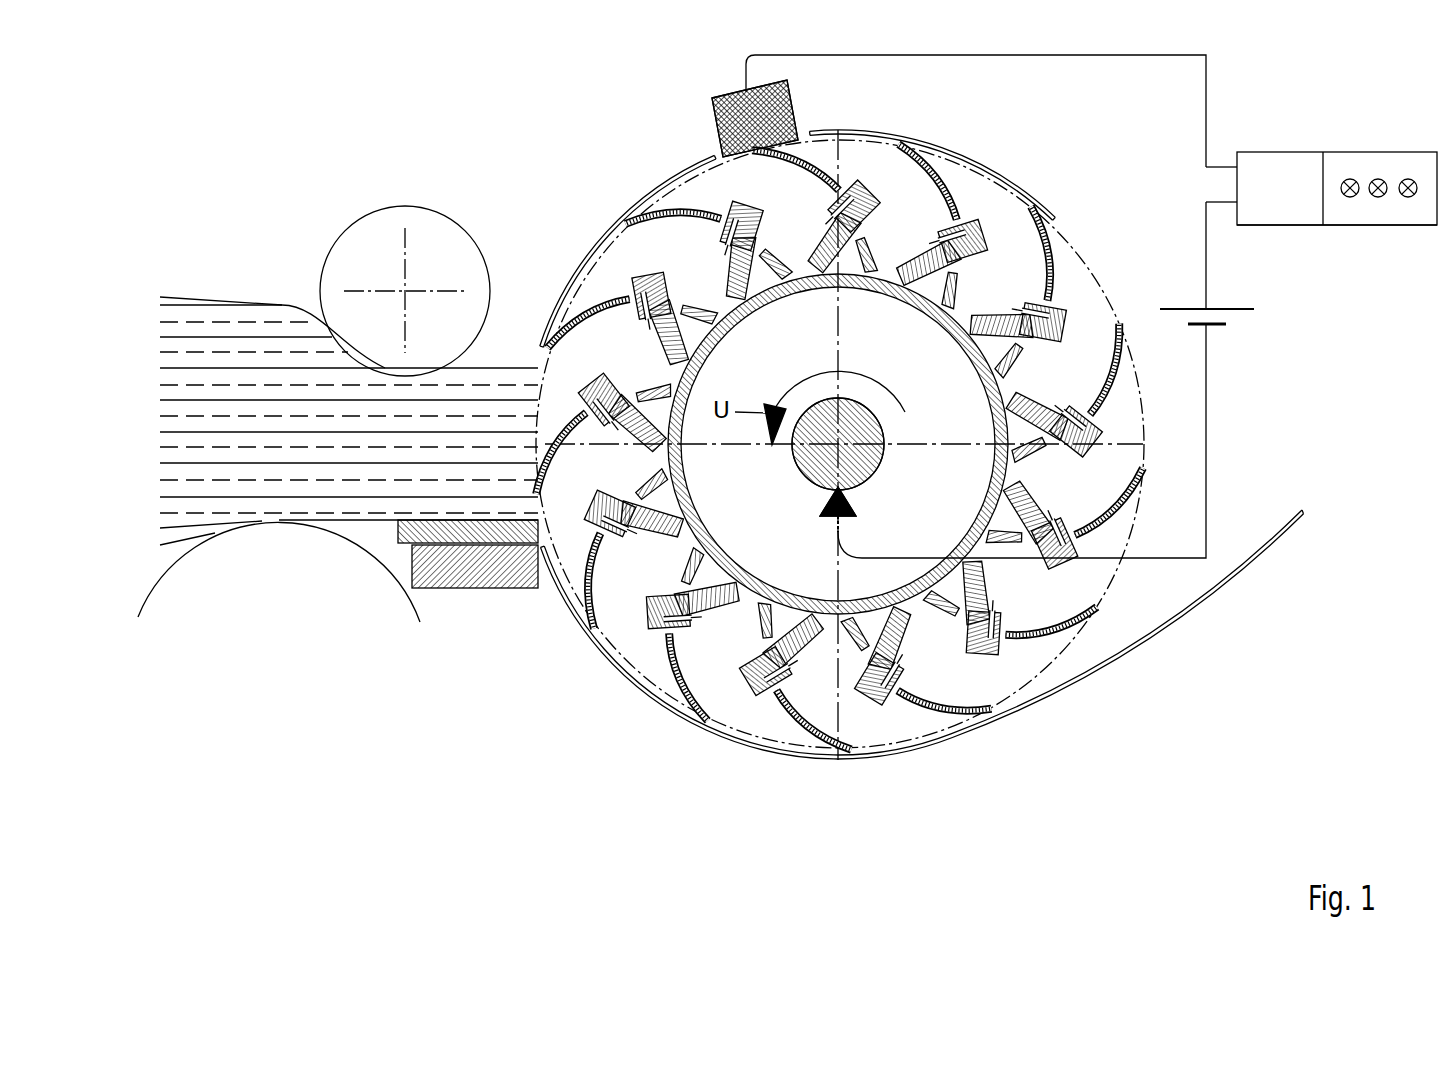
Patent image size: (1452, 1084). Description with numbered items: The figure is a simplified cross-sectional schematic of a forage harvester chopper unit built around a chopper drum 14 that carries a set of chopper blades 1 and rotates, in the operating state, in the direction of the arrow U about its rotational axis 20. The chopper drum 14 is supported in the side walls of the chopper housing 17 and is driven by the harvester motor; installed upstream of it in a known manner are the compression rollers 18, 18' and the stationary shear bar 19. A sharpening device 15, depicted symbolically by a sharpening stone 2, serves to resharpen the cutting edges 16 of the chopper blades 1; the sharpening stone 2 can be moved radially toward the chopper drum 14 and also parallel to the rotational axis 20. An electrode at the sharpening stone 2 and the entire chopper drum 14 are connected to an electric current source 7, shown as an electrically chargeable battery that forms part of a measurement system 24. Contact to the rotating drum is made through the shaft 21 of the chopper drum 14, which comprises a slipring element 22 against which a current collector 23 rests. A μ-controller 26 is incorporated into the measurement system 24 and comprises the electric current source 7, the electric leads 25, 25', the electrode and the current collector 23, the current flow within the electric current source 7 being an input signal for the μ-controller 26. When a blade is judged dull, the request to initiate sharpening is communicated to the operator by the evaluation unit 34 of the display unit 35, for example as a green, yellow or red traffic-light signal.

The chopper blade 1 is at (793, 163).
The sharpening stone 2 is at (712, 106).
The sharpening device 15 is at (702, 104).
The electric current source 7 is at (1231, 305).
The chopper drum 14 is at (714, 788).
The cutting edge 16 is at (758, 150).
The chopper housing 17 is at (636, 686).
The compression roller 18 is at (430, 261).
The compression roller 18' is at (279, 577).
The stationary shear bar 19 is at (405, 556).
The rotational axis 20 is at (884, 434).
The shaft 21 is at (812, 460).
The slipring element 22 is at (853, 509).
The current collector 23 is at (878, 502).
The measurement system 24 is at (1312, 394).
The electric lead 25 is at (1011, 181).
The electric lead 25' is at (1067, 441).
The μ-controller 26 is at (1308, 150).
The evaluation unit 34 is at (1351, 264).
The display unit 35 is at (1378, 157).